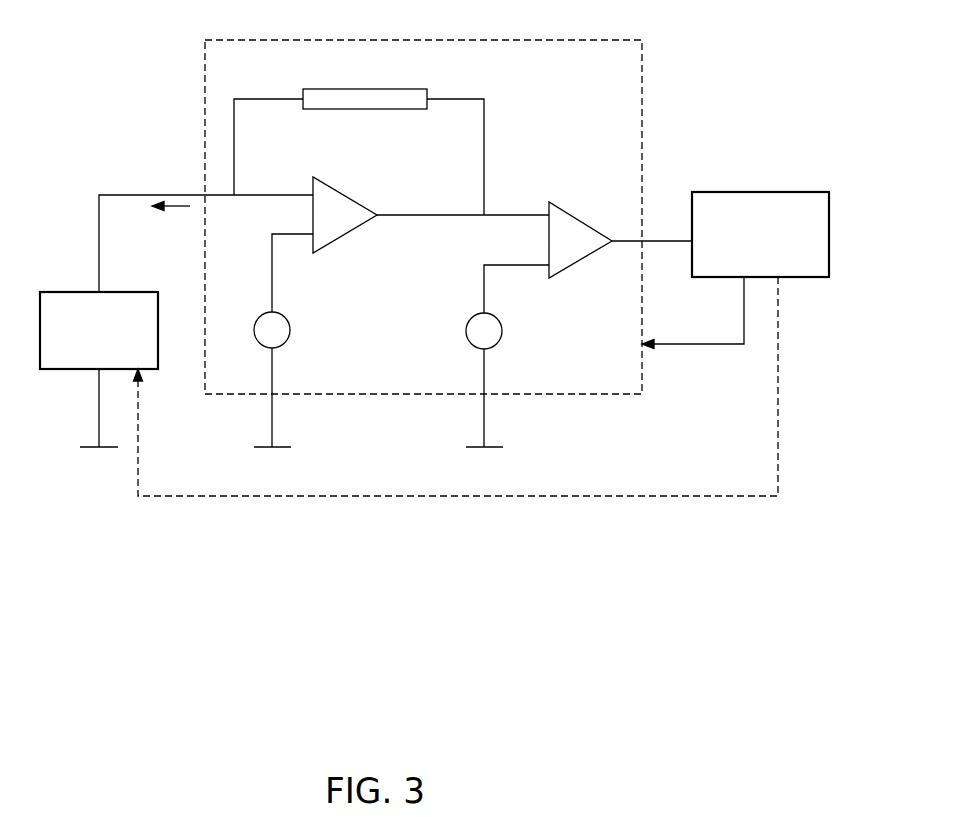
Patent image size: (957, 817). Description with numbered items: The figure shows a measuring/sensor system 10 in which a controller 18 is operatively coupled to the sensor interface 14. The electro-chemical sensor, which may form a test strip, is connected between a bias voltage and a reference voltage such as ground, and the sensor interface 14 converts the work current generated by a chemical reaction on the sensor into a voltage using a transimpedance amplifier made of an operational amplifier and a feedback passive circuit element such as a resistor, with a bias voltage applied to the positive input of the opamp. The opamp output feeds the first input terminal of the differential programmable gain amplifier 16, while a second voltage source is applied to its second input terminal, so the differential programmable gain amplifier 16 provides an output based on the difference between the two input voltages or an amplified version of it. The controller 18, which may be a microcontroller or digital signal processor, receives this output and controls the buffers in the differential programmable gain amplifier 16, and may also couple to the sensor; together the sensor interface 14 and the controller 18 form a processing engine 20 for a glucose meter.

The measuring/sensor system 10 is at (76, 36).
The sensor interface 14 is at (203, 107).
The differential programmable gain amplifier (DPGA) 16 is at (573, 259).
The controller 18 is at (745, 192).
The processing engine 20 is at (692, 93).